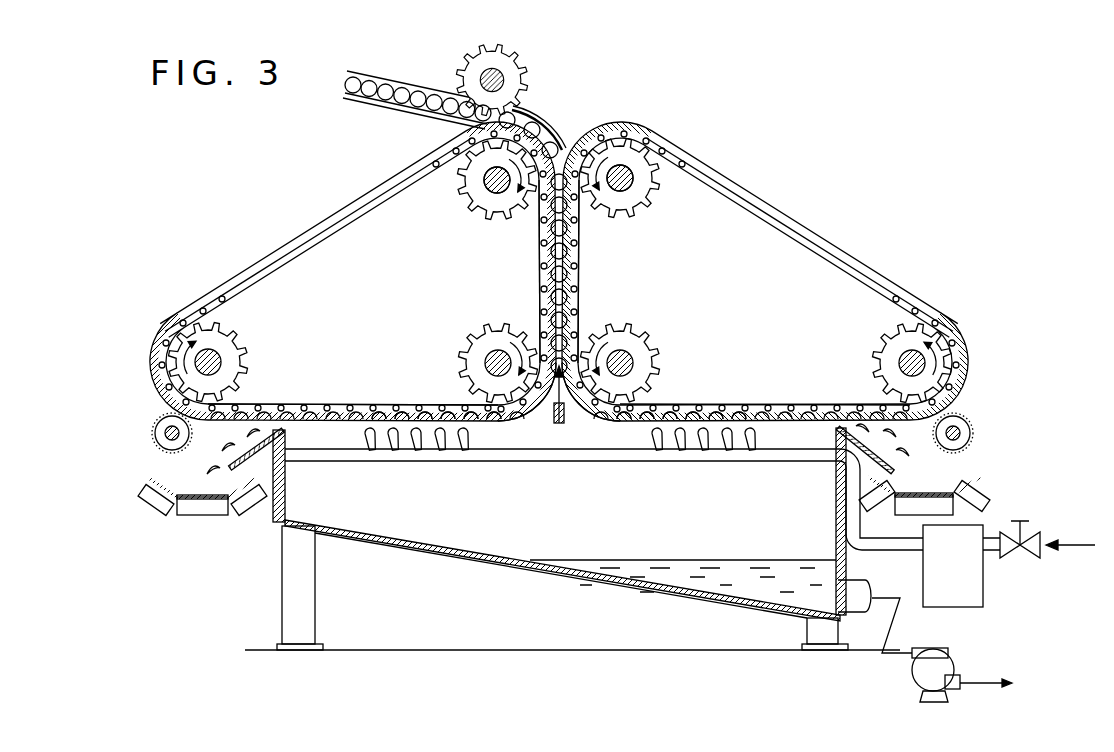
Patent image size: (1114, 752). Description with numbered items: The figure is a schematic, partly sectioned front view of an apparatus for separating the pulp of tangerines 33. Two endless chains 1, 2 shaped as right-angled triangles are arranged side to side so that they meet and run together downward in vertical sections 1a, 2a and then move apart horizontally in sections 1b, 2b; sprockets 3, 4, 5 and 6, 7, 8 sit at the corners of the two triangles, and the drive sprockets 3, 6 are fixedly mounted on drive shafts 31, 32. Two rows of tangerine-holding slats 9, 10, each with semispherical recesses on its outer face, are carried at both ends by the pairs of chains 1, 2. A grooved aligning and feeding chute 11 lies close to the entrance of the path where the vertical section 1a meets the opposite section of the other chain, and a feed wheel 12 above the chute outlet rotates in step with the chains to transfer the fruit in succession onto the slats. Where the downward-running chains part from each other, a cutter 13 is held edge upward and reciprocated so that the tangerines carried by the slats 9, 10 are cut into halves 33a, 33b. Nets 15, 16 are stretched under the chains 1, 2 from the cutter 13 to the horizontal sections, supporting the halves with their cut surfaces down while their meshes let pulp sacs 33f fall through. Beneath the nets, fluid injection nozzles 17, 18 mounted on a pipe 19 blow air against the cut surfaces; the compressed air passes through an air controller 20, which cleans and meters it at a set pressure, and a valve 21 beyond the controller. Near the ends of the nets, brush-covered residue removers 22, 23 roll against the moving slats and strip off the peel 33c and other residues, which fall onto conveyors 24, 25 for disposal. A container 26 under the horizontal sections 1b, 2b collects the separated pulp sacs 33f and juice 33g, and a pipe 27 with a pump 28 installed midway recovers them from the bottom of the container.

The endless chain 1 is at (417, 188).
The vertical section of chain 1 1a is at (536, 272).
The horizontal section of chain 1 1b is at (350, 405).
The endless chain 2 is at (690, 163).
The vertical section of chain 2 2a is at (583, 272).
The horizontal section of chain 2 2b is at (760, 403).
The sprocket 3 is at (468, 205).
The sprocket 4 is at (465, 355).
The sprocket 5 is at (237, 330).
The sprocket 6 is at (641, 208).
The sprocket 7 is at (648, 342).
The sprocket 8 is at (880, 340).
The tangerine-holding slat 9 is at (404, 410).
The tangerine-holding slat 10 is at (690, 408).
The chute 11 is at (416, 88).
The feed wheel 12 is at (527, 65).
The cutter 13 is at (565, 410).
The net 15 is at (515, 423).
The net 16 is at (600, 415).
The fluid injection nozzle 17 is at (415, 452).
The fluid injection nozzle 18 is at (707, 447).
The pipe 19 is at (790, 453).
The air controller 20 is at (984, 592).
The valve 21 is at (1030, 522).
The residue remover 22 is at (158, 427).
The residue remover 23 is at (968, 430).
The conveyor 24 is at (160, 478).
The conveyor 25 is at (967, 482).
The container 26 is at (403, 547).
The pipe 27 is at (853, 607).
The pump 28 is at (933, 666).
The drive shaft 31 is at (497, 193).
The drive shaft 32 is at (632, 175).
The tangerine 33 is at (385, 97).
The fruit half 33a is at (472, 423).
The fruit half 33b is at (645, 420).
The peel 33c is at (213, 467).
The pulp sac 33f is at (610, 567).
The juice 33g is at (672, 607).